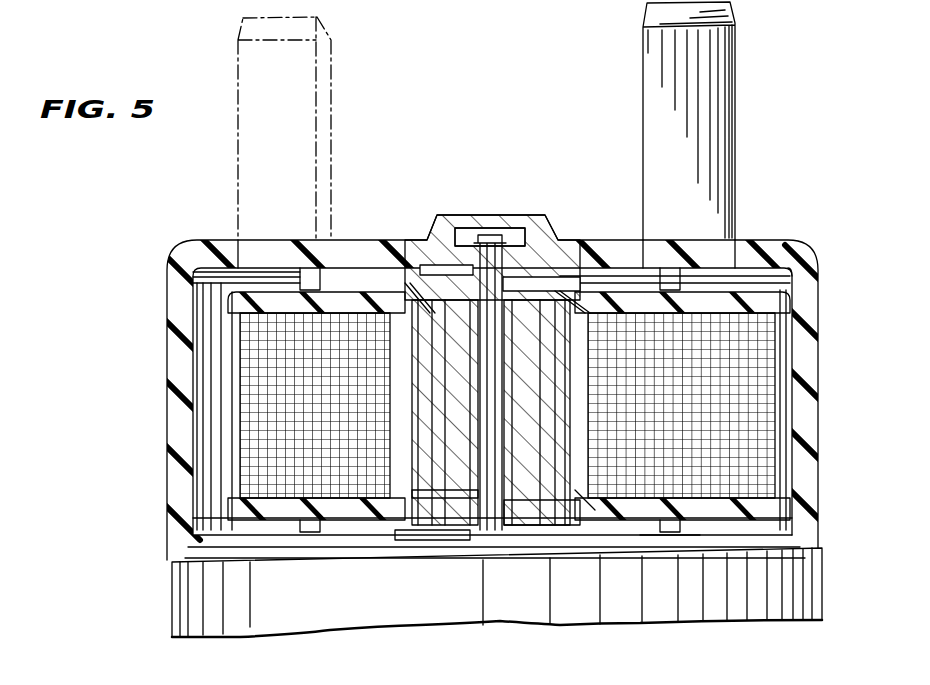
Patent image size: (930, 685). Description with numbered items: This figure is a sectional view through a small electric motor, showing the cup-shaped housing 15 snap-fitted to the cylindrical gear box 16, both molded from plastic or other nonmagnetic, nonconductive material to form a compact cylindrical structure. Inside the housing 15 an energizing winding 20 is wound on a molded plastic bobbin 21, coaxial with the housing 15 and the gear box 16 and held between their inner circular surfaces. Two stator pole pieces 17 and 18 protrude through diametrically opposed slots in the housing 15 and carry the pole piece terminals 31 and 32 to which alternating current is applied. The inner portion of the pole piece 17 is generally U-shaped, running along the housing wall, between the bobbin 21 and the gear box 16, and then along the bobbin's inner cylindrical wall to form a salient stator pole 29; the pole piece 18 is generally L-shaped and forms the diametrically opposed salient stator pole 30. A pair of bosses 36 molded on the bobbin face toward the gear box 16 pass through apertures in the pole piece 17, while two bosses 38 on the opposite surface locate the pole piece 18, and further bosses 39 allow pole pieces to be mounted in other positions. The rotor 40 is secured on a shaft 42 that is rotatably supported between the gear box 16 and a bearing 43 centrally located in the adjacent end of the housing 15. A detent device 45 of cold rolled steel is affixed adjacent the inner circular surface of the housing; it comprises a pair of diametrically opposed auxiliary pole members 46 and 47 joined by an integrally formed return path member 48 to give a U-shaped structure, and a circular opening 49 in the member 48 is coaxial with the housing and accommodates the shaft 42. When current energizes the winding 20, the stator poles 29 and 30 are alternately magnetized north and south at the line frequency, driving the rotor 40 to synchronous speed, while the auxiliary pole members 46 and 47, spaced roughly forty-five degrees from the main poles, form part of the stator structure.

The housing 15 is at (820, 413).
The gear box 16 is at (792, 520).
The stator pole piece 17 is at (738, 158).
The stator pole piece 18 is at (238, 196).
The energizing winding 20 is at (770, 337).
The bobbin 21 is at (805, 284).
The salient stator pole 29 is at (542, 500).
The salient stator pole 30 is at (403, 535).
The pole piece terminal 31 is at (733, 68).
The pole piece terminal 32 is at (324, 60).
The bosses 36 is at (670, 527).
The bosses 38 is at (338, 270).
The further bosses 39 is at (683, 262).
The rotor 40 is at (560, 280).
The shaft 42 is at (535, 270).
The bearing 43 is at (517, 240).
The detent device 45 is at (430, 292).
The auxiliary pole member 46 is at (562, 505).
The auxiliary pole member 47 is at (425, 490).
The return path member 48 is at (433, 293).
The circular opening 49 is at (472, 236).